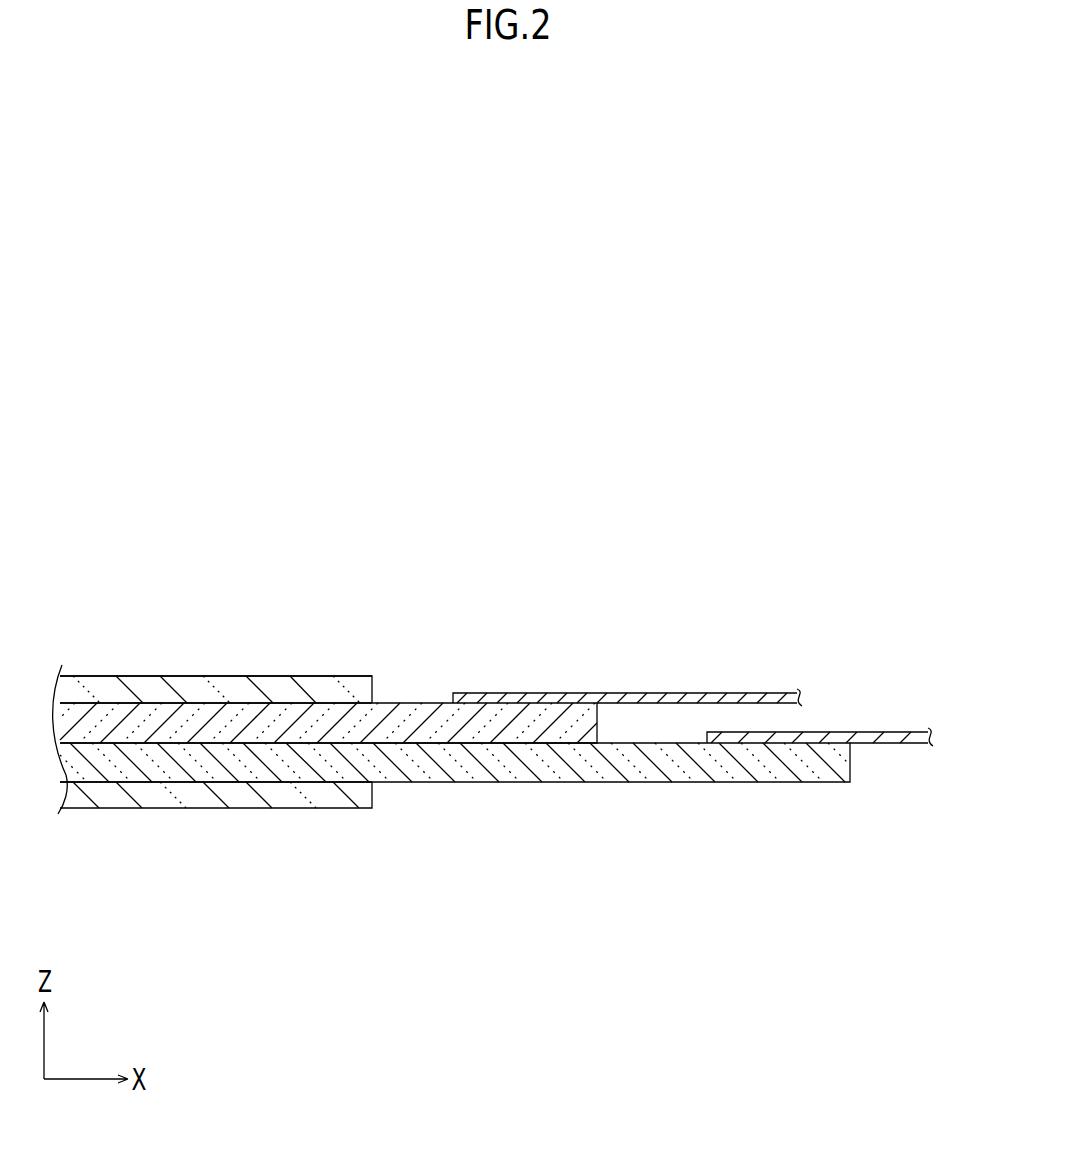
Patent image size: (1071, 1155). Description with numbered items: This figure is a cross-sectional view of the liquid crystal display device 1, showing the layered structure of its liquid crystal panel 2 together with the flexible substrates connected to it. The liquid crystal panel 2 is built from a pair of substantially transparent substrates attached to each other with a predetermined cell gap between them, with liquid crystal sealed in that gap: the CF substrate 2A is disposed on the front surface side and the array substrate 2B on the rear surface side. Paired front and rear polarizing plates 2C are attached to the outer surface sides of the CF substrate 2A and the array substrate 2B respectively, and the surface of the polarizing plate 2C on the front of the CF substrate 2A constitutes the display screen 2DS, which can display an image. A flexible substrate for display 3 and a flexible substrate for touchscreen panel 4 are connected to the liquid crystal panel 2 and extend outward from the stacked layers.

The liquid crystal display device 1 is at (493, 801).
The liquid crystal panel 2 is at (451, 745).
The CF substrate 2A is at (400, 713).
The array substrate 2B is at (386, 768).
The polarizing plate 2C is at (270, 687).
The display screen 2DS is at (136, 674).
The flexible substrate for display 3 is at (880, 731).
The flexible substrate for touchscreen panel 4 is at (685, 695).